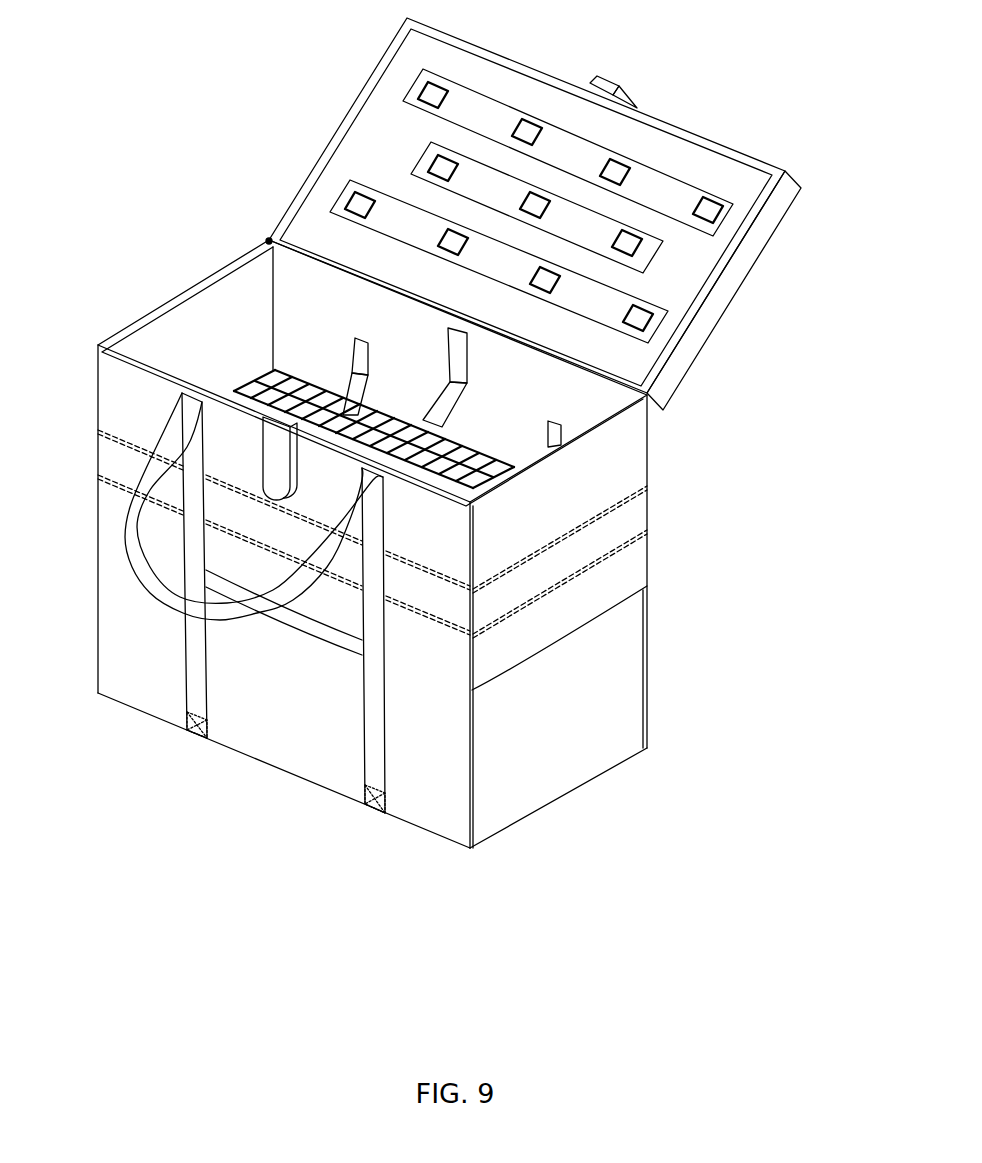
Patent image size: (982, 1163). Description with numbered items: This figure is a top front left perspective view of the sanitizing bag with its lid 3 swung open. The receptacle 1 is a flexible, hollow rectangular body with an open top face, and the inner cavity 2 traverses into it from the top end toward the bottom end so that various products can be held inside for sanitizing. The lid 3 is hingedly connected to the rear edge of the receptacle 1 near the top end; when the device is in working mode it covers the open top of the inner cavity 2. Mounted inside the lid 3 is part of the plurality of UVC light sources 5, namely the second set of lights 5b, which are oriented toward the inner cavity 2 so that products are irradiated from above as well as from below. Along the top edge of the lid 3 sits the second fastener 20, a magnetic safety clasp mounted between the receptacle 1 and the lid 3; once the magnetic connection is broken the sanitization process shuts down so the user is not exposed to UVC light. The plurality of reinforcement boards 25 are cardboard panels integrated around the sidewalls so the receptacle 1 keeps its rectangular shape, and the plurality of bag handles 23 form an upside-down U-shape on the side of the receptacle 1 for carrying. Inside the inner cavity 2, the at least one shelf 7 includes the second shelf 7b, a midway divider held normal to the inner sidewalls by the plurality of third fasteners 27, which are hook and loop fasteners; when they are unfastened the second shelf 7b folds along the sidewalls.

The receptacle 1 is at (639, 578).
The inner cavity 2 is at (137, 344).
The lid 3 is at (793, 178).
The plurality of UVC light sources 5 is at (538, 206).
The second set of lights 5b is at (628, 167).
The at least one shelf 7 is at (351, 342).
The second shelf 7b is at (268, 375).
The second fastener 20 is at (597, 78).
The plurality of bag handles 23 is at (133, 538).
The plurality of reinforcement boards 25 is at (152, 310).
The plurality of third fasteners 27 is at (360, 366).